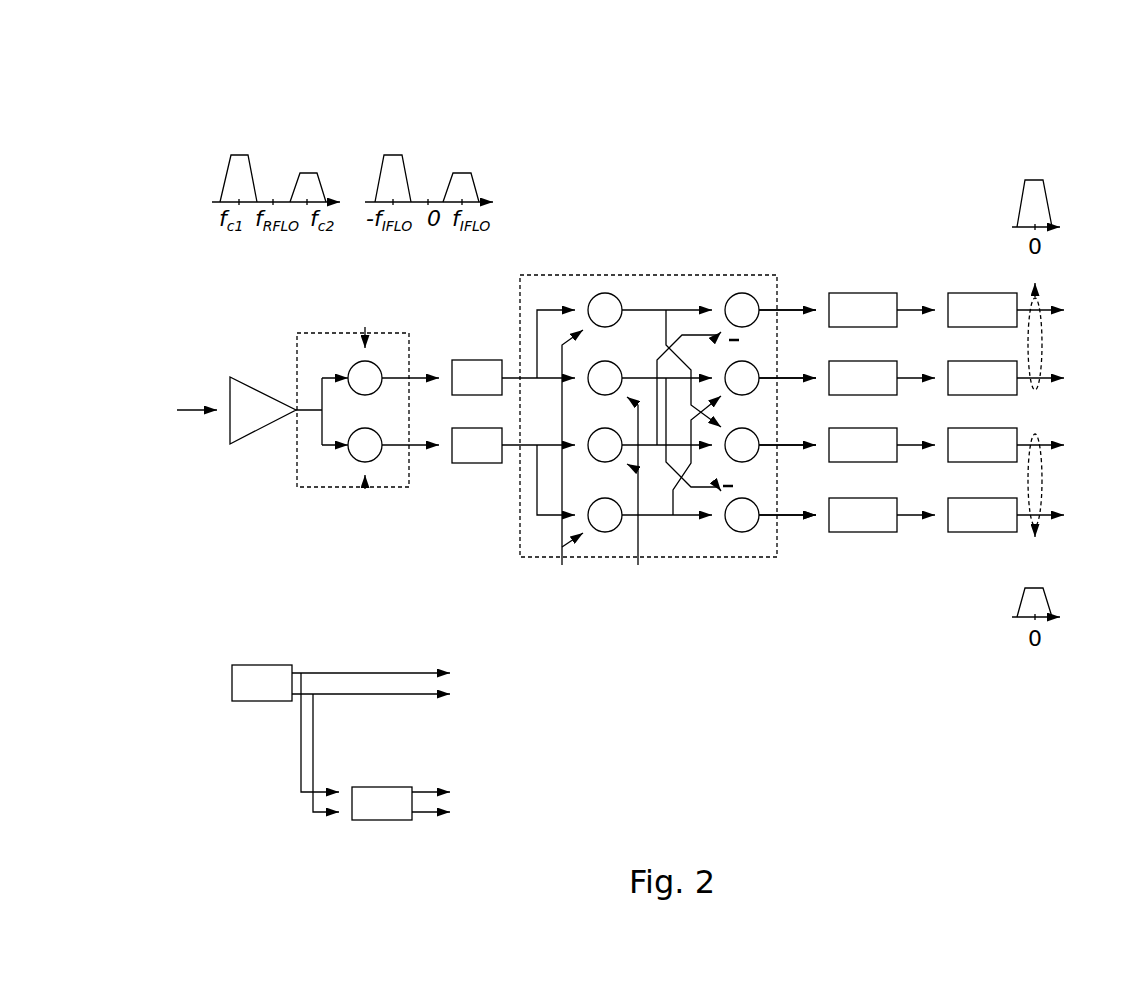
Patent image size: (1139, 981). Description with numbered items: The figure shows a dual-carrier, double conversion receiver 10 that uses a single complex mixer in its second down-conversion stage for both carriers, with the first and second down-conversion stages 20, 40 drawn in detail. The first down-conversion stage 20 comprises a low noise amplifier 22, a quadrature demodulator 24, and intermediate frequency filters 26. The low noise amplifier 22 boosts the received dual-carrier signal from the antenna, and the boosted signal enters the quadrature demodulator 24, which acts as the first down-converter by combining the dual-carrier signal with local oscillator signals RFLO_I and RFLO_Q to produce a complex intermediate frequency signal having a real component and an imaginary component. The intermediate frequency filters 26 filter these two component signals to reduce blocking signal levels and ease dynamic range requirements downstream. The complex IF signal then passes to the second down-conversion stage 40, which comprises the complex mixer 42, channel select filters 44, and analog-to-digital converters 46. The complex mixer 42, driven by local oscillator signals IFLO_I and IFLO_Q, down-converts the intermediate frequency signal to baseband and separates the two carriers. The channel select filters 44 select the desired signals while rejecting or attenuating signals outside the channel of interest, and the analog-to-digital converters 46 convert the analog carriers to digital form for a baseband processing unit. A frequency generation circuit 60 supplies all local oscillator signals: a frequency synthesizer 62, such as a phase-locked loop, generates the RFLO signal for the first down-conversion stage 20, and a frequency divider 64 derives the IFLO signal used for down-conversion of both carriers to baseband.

The receiver 10 is at (1030, 90).
The first down-conversion stage 20 is at (166, 277).
The low noise amplifier 22 is at (253, 423).
The quadrature demodulator 24 is at (410, 472).
The intermediate frequency filters 26 is at (495, 360).
The second down-conversion stage 40 is at (775, 165).
The complex mixer 42 is at (740, 557).
The channel select filters 44 is at (888, 293).
The analog-to-digital converters 46 is at (993, 293).
The frequency generation circuit 60 is at (206, 633).
The frequency synthesizer 62 is at (270, 701).
The frequency divider 64 is at (387, 820).